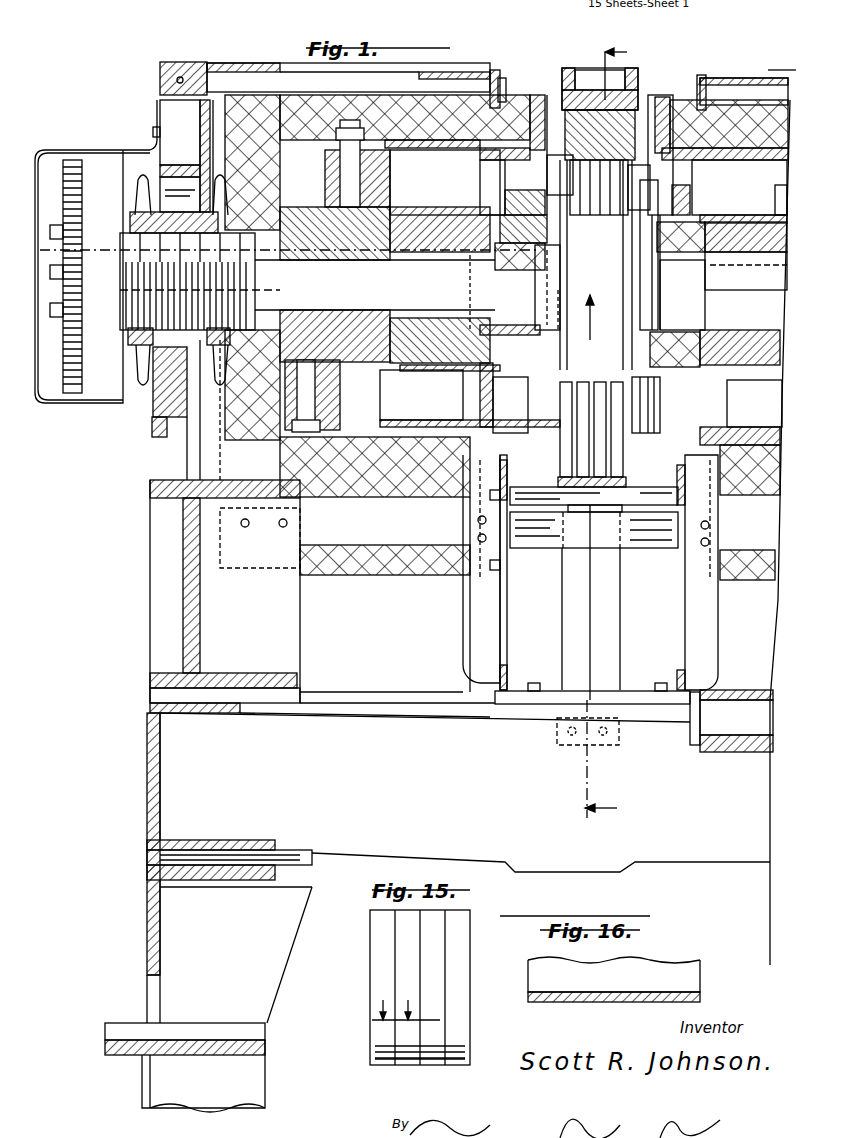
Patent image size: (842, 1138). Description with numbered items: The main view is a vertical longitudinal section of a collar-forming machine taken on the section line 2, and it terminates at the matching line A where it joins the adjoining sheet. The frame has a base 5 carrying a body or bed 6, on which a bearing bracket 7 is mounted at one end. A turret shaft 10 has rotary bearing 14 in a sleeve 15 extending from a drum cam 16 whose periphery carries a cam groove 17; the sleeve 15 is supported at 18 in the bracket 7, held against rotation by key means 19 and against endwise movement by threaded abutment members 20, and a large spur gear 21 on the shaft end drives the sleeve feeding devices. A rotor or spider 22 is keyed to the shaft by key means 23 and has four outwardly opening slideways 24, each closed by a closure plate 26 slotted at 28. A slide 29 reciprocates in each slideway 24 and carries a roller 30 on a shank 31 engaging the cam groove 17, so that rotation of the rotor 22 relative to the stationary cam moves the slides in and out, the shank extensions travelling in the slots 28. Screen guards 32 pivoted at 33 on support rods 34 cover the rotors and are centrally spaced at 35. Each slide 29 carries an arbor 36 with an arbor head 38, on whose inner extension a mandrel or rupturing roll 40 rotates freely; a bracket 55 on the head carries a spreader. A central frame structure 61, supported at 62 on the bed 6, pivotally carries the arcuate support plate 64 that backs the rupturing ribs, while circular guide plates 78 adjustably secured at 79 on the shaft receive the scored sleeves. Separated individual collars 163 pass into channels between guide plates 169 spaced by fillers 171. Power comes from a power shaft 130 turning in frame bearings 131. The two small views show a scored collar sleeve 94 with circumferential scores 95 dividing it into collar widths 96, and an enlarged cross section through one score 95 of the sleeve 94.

In FIG. 1, the section line 2 is at (606, 435).
In FIG. 1, the base 5 is at (146, 948).
In FIG. 1, the body or bed 6 is at (147, 768).
In FIG. 1, the bearing bracket 7 is at (190, 365).
In FIG. 1, the turret shaft 10 is at (105, 300).
In FIG. 1, the rotary bearing 14 is at (305, 316).
In FIG. 1, the sleeve 15 is at (130, 262).
In FIG. 1, the drum cam 16 is at (383, 270).
In FIG. 15, the drum cam 16 is at (405, 1001).
In FIG. 1, the cam groove 17 is at (348, 250).
In FIG. 1, the sleeve support 18 is at (165, 210).
In FIG. 1, the key means 19 is at (165, 342).
In FIG. 1, the abutment members 20 is at (130, 225).
In FIG. 1, the spur gear 21 is at (85, 165).
In FIG. 1, the rotor or spider 22 is at (418, 254).
In FIG. 1, the key means 23 is at (440, 262).
In FIG. 1, the slideway 24 is at (475, 250).
In FIG. 1, the closure plate 26 is at (533, 105).
In FIG. 1, the slot 28 is at (350, 120).
In FIG. 1, the slide 29 is at (584, 292).
In FIG. 1, the roller 30 is at (345, 208).
In FIG. 1, the roller supporting shank 31 is at (372, 118).
In FIG. 1, the screen guard 32 is at (285, 95).
In FIG. 1, the pivotal support 33 is at (455, 75).
In FIG. 1, the support rod 34 is at (494, 72).
In FIG. 1, the screen spacing 35 is at (648, 96).
In FIG. 1, the arbor 36 is at (630, 222).
In FIG. 1, the arbor head 38 is at (507, 320).
In FIG. 1, the mandrel or rupturing roll 40 is at (600, 205).
In FIG. 1, the bracket 55 is at (583, 250).
In FIG. 1, the frame structure 61 is at (500, 620).
In FIG. 1, the frame structure support 62 is at (545, 670).
In FIG. 1, the arcuate support plate 64 is at (575, 80).
In FIG. 1, the circular guide plate 78 is at (625, 355).
In FIG. 1, the adjustable securing means 79 is at (650, 270).
In FIG. 15, the scored collar sleeve 94 is at (366, 966).
In FIG. 16, the scored collar sleeve 94 is at (560, 996).
In FIG. 15, the score 95 is at (400, 936).
In FIG. 16, the score 95 is at (612, 1003).
In FIG. 15, the collar width 96 is at (448, 1068).
In FIG. 1, the power shaft 130 is at (752, 735).
In FIG. 1, the frame bearing 131 is at (712, 752).
In FIG. 1, the individual collar 163 is at (615, 430).
In FIG. 1, the guide plate 169 is at (635, 490).
In FIG. 1, the filler 171 is at (570, 510).
In FIG. 1, the matching line A is at (771, 519).